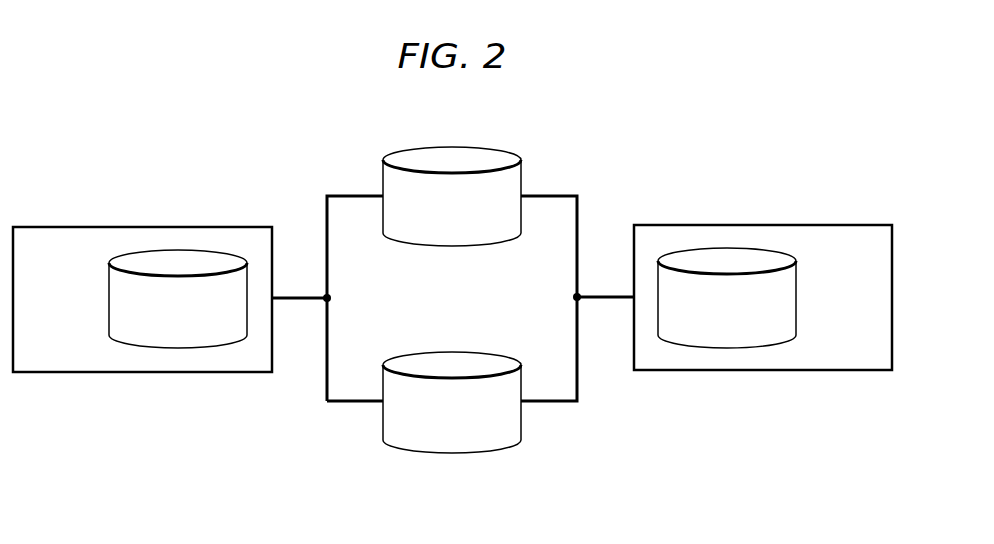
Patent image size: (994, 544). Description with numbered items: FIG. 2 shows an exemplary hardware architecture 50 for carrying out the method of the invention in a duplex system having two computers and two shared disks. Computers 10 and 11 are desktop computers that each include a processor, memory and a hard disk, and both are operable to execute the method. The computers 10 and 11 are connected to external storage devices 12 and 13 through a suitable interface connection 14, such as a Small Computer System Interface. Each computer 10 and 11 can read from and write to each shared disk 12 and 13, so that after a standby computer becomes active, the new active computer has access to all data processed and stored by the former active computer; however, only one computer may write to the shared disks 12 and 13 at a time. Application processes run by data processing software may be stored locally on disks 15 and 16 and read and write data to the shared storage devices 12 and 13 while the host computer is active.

The hardware architecture 50 is at (301, 147).
The computer 10 is at (138, 226).
The computer 11 is at (753, 224).
The external storage device 12 is at (452, 244).
The external storage device 13 is at (452, 451).
The interface connection 14 is at (297, 296).
The local disk 15 is at (109, 304).
The local disk 16 is at (797, 305).